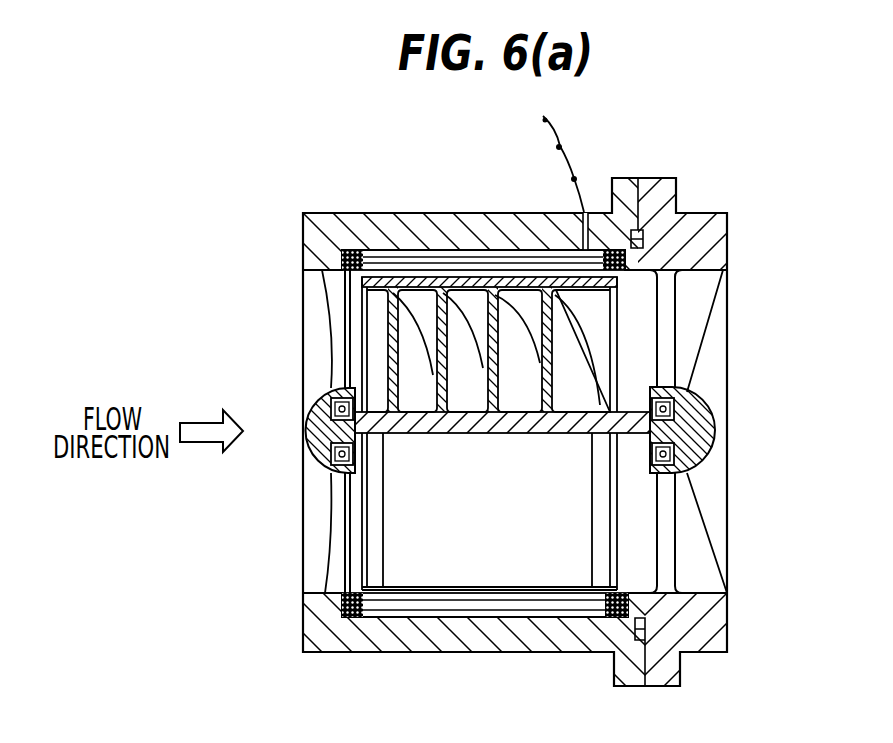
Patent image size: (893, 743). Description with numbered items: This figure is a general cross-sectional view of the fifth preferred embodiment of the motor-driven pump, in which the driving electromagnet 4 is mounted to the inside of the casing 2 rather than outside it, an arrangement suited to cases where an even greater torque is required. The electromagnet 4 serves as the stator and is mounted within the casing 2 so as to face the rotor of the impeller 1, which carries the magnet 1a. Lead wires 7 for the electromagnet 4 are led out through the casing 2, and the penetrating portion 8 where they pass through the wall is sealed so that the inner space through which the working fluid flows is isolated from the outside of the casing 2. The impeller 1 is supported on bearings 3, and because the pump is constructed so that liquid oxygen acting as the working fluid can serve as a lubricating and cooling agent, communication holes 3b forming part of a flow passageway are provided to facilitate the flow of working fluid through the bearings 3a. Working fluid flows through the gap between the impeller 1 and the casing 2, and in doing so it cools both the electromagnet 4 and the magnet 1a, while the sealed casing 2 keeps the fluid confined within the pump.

The impeller 1 is at (567, 435).
The magnet 1a is at (418, 280).
The casing 2 is at (302, 213).
The bearings 3 is at (520, 447).
The bearings 3a is at (695, 391).
The communication holes 3b is at (316, 398).
The driving electromagnet 4 is at (490, 249).
The lead wires 7 is at (560, 138).
The penetrating portion 8 is at (588, 210).